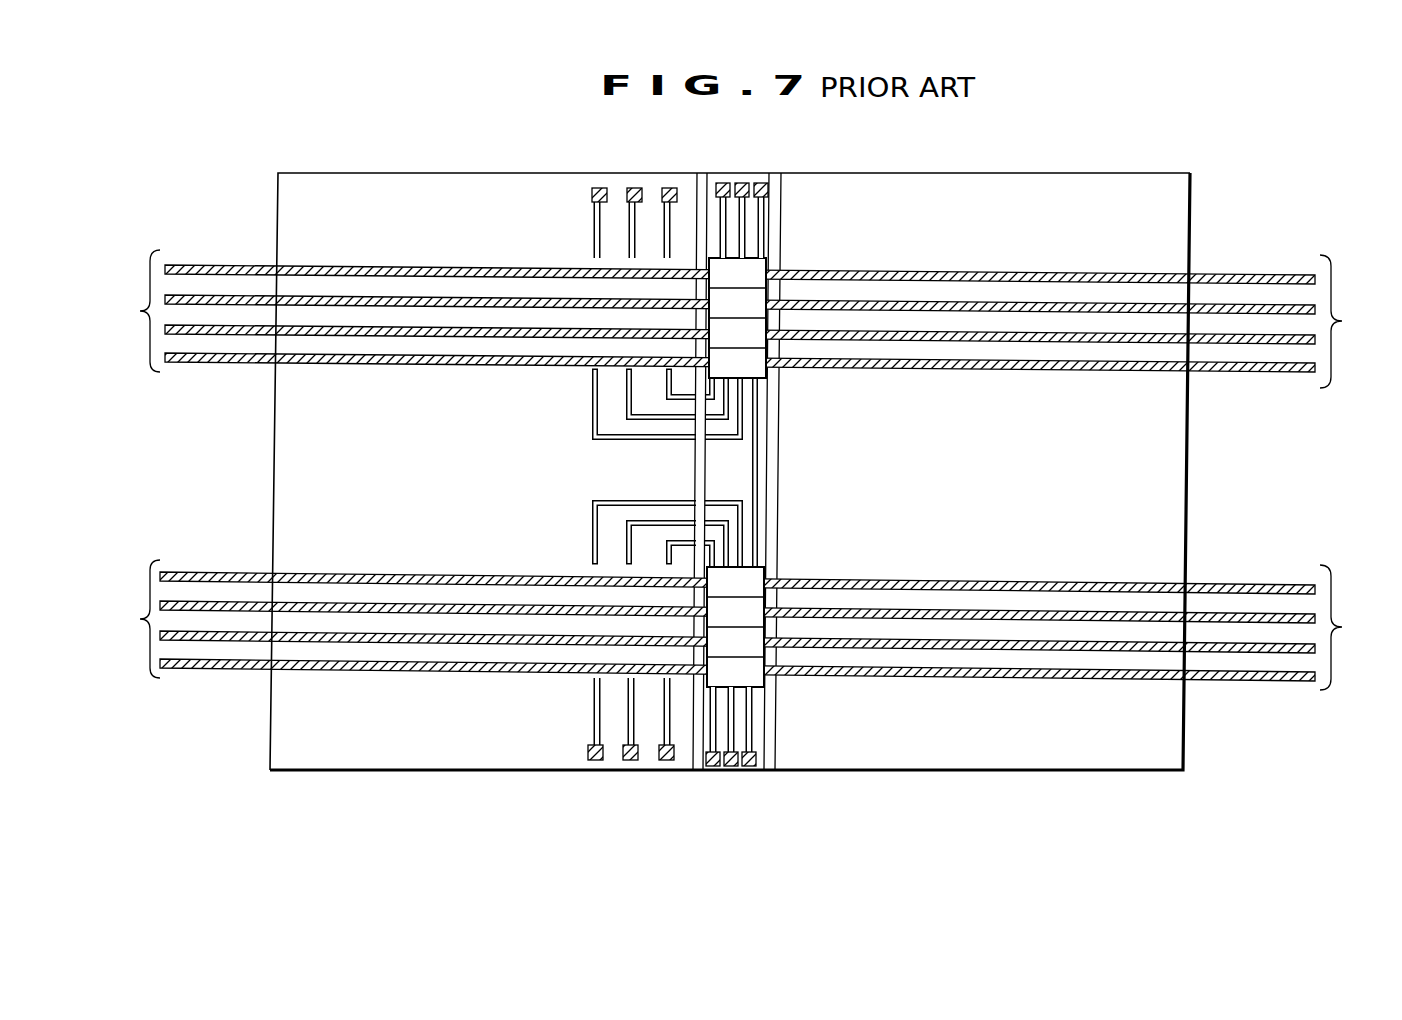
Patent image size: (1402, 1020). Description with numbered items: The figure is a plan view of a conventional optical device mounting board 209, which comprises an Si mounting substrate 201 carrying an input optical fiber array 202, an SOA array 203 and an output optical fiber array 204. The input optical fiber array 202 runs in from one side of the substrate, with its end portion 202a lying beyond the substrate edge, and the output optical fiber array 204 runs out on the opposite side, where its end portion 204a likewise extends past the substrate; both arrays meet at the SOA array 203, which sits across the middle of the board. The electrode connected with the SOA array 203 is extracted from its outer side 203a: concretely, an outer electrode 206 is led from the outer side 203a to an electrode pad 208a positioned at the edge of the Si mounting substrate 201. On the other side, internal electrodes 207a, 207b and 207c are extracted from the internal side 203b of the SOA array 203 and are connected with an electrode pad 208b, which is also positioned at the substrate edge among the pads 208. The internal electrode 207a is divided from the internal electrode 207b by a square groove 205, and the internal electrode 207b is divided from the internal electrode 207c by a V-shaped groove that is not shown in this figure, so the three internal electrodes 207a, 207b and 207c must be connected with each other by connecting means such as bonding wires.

The Si mounting substrate 201 is at (1108, 752).
The input optical fiber array 202 is at (697, 464).
The end portion of signal line 202a is at (212, 262).
The SOA array 203 is at (760, 270).
The outer side of SOA array 203a is at (752, 700).
The internal side of SOA array 203b is at (752, 560).
The output optical fiber array 204 is at (1359, 472).
The end portion of signal line 204a is at (1250, 274).
The square groove 205 is at (692, 772).
The outer electrode 206 is at (777, 209).
The internal electrode 207a is at (758, 502).
The internal electrode 207b is at (592, 437).
The internal electrode 207c is at (590, 231).
The electrode pads 208 is at (650, 192).
The electrode pad 208a is at (731, 770).
The electrode pad 208b is at (622, 760).
The optical device mounting board 209 is at (1056, 158).